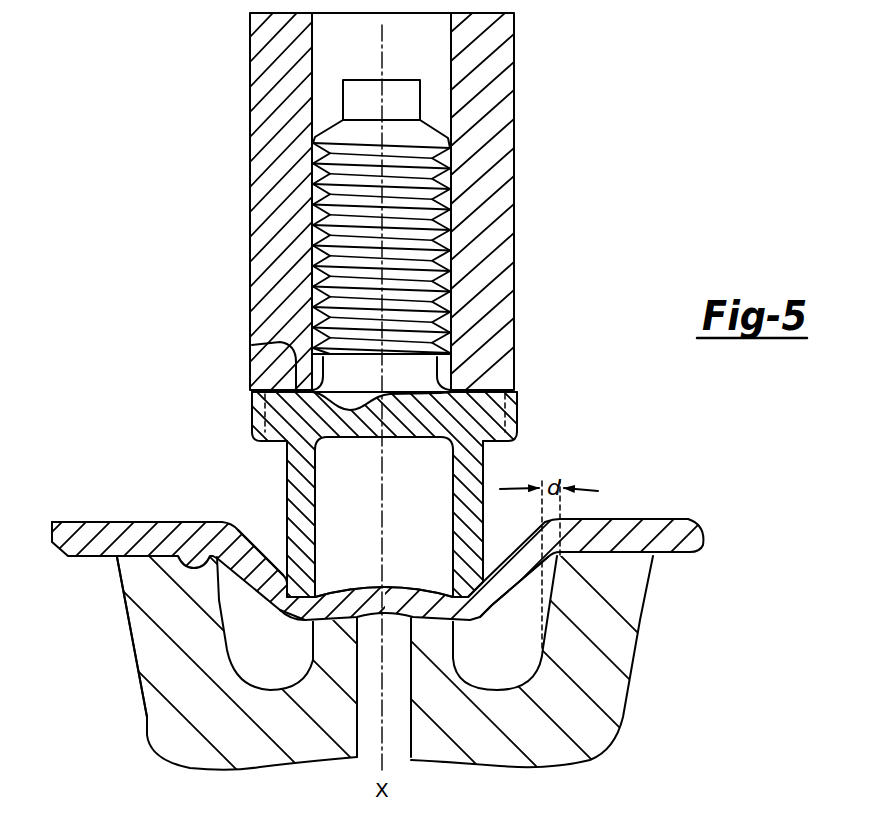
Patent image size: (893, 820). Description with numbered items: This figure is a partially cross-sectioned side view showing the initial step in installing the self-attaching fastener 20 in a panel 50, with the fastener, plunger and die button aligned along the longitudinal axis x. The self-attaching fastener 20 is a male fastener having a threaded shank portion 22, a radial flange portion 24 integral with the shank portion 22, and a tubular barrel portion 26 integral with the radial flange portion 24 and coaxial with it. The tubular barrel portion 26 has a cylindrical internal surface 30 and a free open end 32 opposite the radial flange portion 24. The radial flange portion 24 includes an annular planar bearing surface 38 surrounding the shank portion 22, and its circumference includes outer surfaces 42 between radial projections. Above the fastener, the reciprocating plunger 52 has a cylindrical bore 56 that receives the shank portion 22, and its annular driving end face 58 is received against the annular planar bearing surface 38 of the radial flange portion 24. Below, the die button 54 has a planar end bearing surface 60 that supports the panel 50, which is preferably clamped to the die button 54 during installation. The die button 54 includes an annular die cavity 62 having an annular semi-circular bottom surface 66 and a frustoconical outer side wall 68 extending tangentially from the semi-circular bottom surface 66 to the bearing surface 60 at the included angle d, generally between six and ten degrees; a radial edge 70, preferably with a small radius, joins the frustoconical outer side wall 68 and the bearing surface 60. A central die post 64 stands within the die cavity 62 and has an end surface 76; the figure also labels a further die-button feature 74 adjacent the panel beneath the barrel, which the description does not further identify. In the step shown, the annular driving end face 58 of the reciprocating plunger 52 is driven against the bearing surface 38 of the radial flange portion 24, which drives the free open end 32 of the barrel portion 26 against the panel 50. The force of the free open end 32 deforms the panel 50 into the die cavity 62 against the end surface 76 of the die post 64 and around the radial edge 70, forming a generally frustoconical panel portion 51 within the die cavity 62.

The self-attaching fastener 20 is at (246, 443).
The shank portion 22 is at (420, 137).
The radial flange portion 24 is at (250, 418).
The tubular barrel portion 26 is at (483, 471).
The cylindrical internal surface 30 is at (315, 507).
The free open end 32 is at (483, 603).
The annular planar bearing surface 38 is at (252, 345).
The outer surfaces of the radial flange portion 42 is at (518, 415).
The panel 50 is at (703, 545).
The frustoconical panel portion 51 is at (247, 548).
The reciprocating plunger 52 is at (250, 209).
The die button 54 is at (582, 720).
The cylindrical bore 56 is at (312, 62).
The annular driving end face 58 is at (250, 415).
The planar end bearing surface 60 is at (604, 550).
The annular die cavity 62 is at (525, 658).
The central die post 64 is at (333, 624).
The annular semi-circular bottom surface 66 is at (276, 681).
The frustoconical outer side wall 68 is at (236, 610).
The radial edge 70 is at (200, 563).
The panel lower bend 74 is at (313, 621).
The end surface of the die post 76 is at (433, 592).